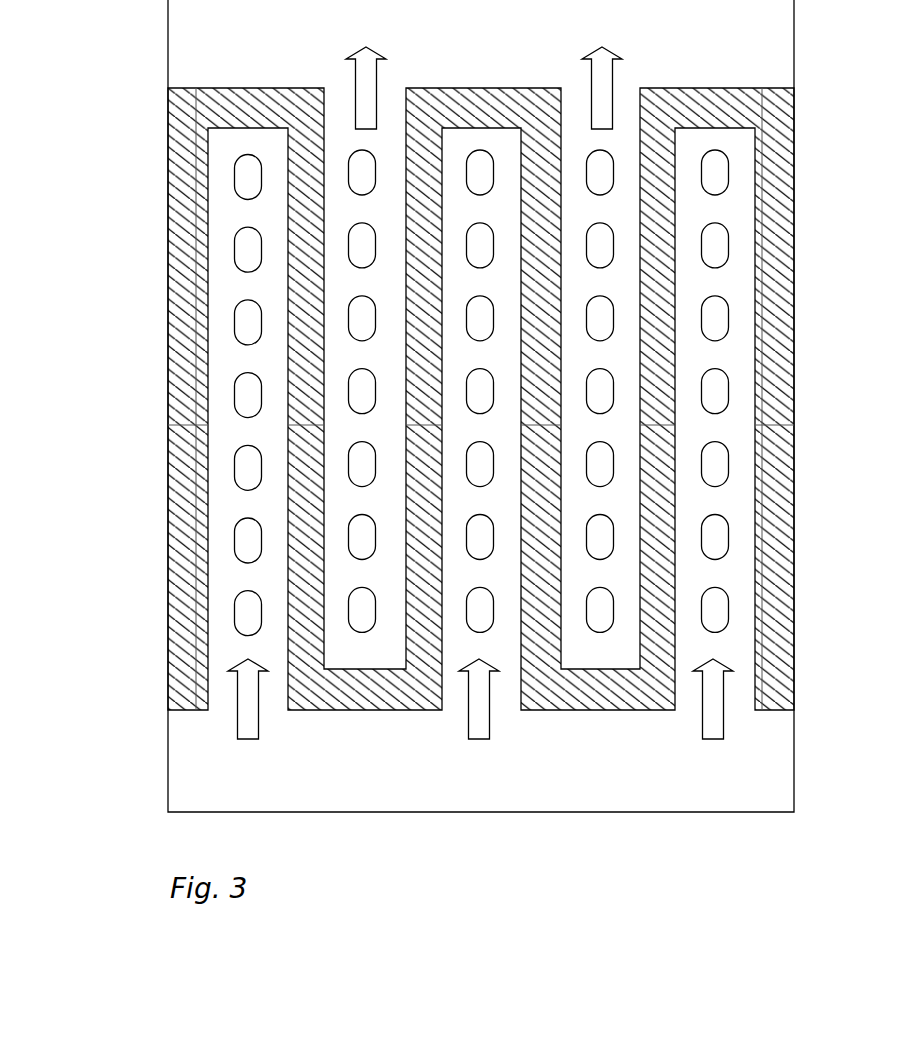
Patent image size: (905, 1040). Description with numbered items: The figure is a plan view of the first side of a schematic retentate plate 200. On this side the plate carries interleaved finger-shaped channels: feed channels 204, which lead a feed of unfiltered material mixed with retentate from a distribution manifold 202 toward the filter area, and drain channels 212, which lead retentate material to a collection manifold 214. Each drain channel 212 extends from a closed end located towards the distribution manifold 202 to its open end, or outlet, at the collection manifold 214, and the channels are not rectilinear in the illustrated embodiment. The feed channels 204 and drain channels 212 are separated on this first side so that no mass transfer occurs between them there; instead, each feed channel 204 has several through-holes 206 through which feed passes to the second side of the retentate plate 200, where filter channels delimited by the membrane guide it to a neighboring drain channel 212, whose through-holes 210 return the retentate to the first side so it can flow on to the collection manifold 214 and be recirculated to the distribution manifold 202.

The retentate plate 200 is at (167, 664).
The distribution manifold 202 is at (378, 774).
The feed channel 204 is at (233, 682).
The through-hole 206 is at (236, 546).
The through-hole 210 is at (348, 537).
The drain channel 212 is at (345, 136).
The collection manifold 214 is at (312, 53).